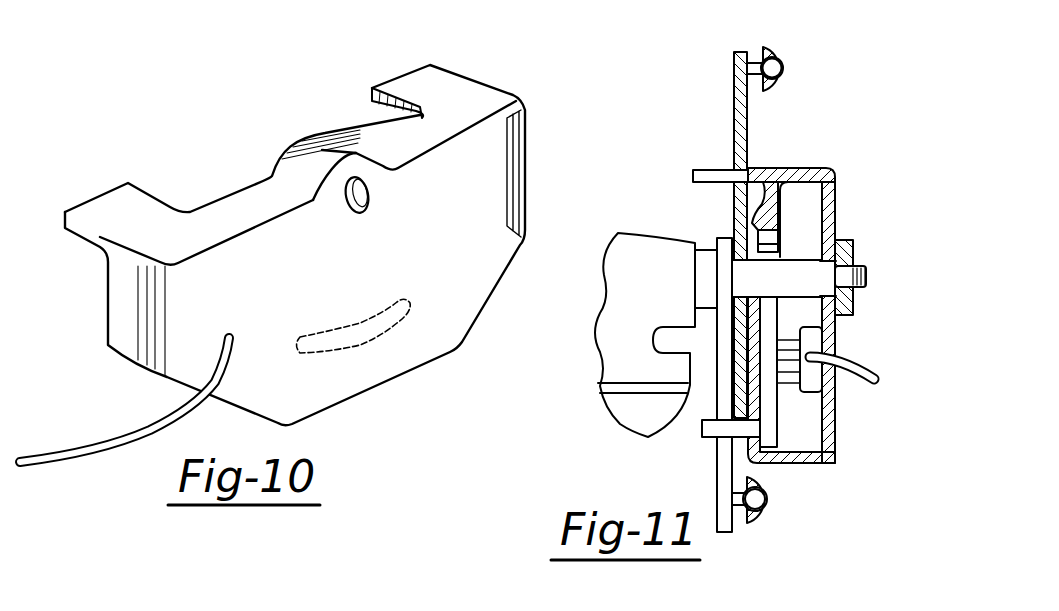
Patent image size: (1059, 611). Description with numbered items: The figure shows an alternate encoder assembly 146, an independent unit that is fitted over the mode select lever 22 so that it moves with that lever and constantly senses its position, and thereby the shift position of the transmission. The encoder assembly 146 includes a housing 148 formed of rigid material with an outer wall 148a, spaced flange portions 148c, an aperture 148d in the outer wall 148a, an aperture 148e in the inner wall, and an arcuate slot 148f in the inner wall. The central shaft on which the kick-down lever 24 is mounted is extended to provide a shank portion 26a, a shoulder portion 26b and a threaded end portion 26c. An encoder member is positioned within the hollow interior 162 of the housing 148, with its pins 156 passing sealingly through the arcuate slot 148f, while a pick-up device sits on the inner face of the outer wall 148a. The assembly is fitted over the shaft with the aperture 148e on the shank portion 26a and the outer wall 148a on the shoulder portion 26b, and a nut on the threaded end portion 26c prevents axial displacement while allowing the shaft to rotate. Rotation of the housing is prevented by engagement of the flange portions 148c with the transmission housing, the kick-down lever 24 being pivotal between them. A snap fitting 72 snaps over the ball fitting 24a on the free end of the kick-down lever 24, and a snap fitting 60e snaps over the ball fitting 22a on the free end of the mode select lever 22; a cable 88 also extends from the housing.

In FIG. 10, the encoder assembly 146 is at (319, 226).
In FIG. 10, the housing 148 is at (319, 226).
In FIG. 11, the housing 148 is at (794, 290).
In FIG. 10, the outer wall 148a is at (492, 200).
In FIG. 11, the outer wall 148a is at (835, 200).
In FIG. 10, the flange portions 148c is at (410, 41).
In FIG. 11, the flange portions 148c is at (702, 168).
In FIG. 10, the aperture 148d is at (367, 213).
In FIG. 11, the aperture 148e is at (757, 262).
In FIG. 10, the arcuate slot 148f is at (363, 323).
In FIG. 11, the arcuate slot 148f is at (762, 430).
In FIG. 10, the cable 88 is at (128, 437).
In FIG. 11, the cable 88 is at (856, 350).
In FIG. 11, the kick-down lever 24 is at (735, 92).
In FIG. 11, the ball fitting 24a is at (772, 47).
In FIG. 11, the snap fitting 72 is at (794, 70).
In FIG. 11, the hollow interior 162 is at (810, 190).
In FIG. 11, the shank portion 26a is at (800, 258).
In FIG. 11, the shoulder portion 26b is at (852, 247).
In FIG. 11, the threaded end portion 26c is at (866, 277).
In FIG. 11, the pins 156 is at (707, 438).
In FIG. 11, the mode select lever 22 is at (716, 485).
In FIG. 11, the ball fitting 22a is at (768, 525).
In FIG. 11, the snap fitting 60e is at (778, 500).